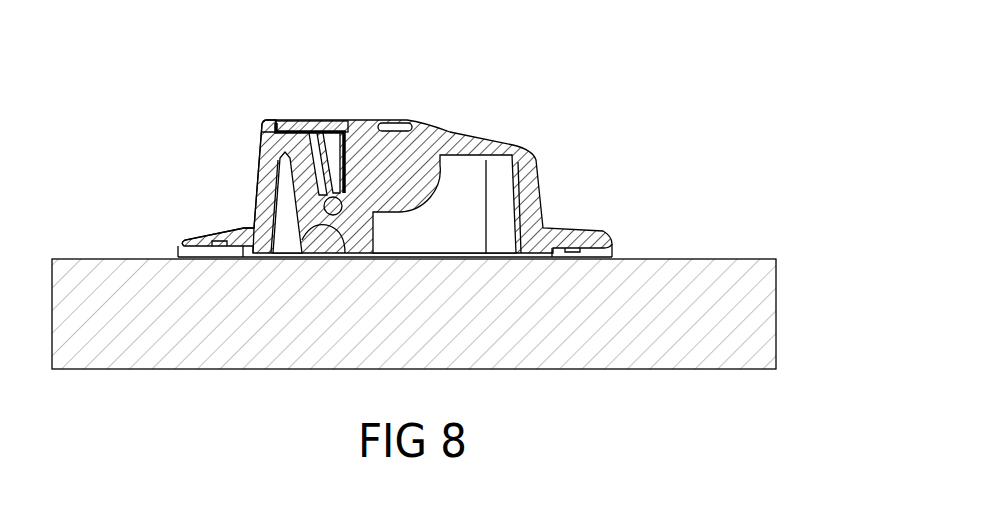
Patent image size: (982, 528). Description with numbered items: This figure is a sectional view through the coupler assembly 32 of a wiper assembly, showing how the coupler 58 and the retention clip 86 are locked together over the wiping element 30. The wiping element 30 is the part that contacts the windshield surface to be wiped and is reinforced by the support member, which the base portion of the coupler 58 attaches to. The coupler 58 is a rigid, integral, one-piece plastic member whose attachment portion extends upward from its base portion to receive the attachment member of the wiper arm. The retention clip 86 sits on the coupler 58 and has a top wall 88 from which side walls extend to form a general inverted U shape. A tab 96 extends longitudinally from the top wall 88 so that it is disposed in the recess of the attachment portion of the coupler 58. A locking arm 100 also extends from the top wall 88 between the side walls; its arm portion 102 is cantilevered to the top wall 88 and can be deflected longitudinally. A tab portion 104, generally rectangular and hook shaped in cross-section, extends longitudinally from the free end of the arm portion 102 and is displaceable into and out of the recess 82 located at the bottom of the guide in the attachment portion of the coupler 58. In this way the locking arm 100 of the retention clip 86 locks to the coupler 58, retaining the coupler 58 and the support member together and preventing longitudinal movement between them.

The wiping element 30 is at (776, 298).
The coupler assembly 32 is at (543, 170).
The coupler 58 is at (260, 172).
The recess 82 is at (320, 244).
The retention clip 86 is at (309, 120).
The top wall 88 is at (330, 126).
The tab 96 is at (288, 120).
The locking arm 100 is at (297, 190).
The arm portion 102 is at (323, 167).
The tab portion 104 is at (300, 250).